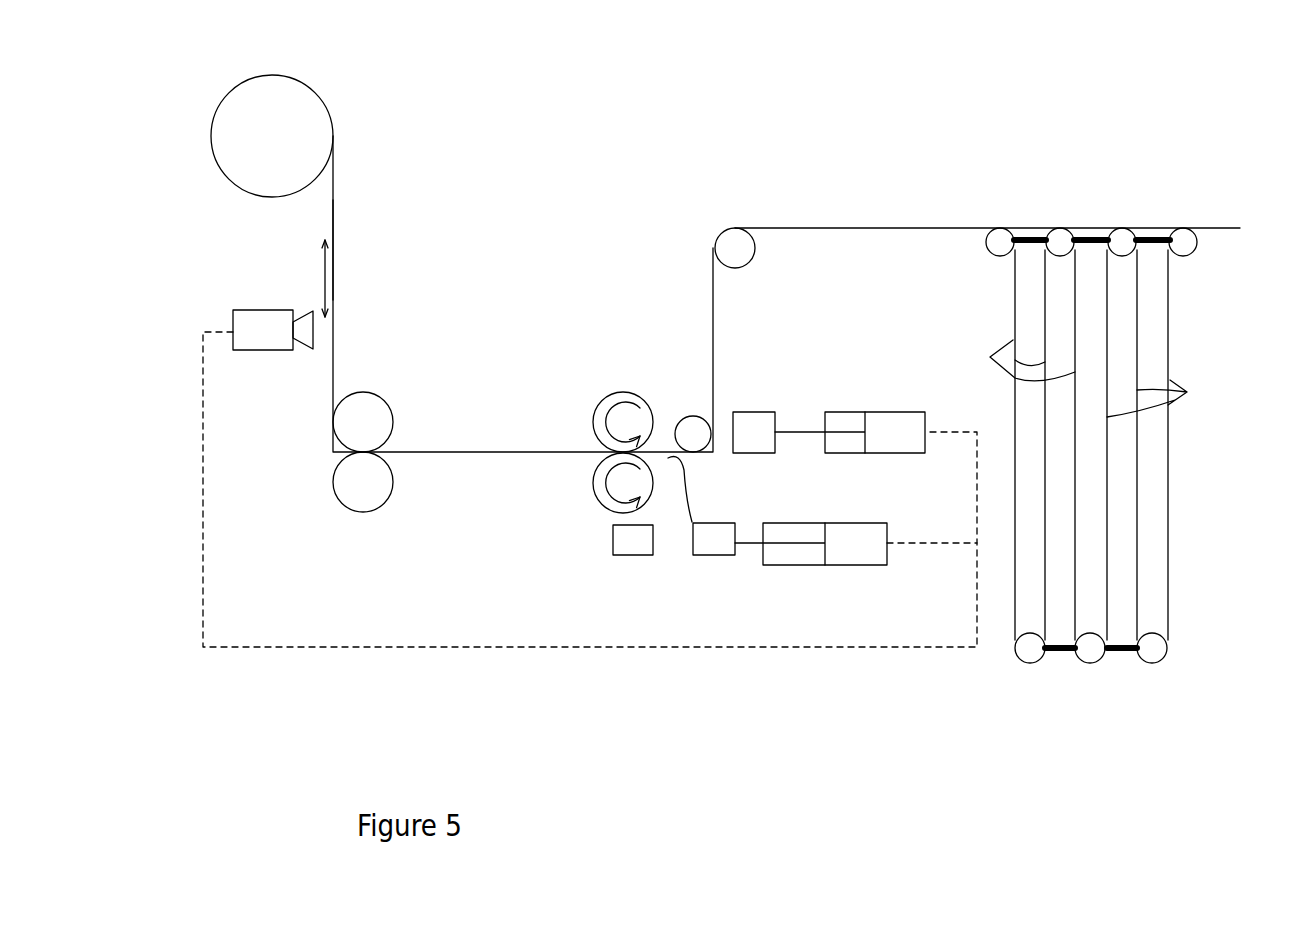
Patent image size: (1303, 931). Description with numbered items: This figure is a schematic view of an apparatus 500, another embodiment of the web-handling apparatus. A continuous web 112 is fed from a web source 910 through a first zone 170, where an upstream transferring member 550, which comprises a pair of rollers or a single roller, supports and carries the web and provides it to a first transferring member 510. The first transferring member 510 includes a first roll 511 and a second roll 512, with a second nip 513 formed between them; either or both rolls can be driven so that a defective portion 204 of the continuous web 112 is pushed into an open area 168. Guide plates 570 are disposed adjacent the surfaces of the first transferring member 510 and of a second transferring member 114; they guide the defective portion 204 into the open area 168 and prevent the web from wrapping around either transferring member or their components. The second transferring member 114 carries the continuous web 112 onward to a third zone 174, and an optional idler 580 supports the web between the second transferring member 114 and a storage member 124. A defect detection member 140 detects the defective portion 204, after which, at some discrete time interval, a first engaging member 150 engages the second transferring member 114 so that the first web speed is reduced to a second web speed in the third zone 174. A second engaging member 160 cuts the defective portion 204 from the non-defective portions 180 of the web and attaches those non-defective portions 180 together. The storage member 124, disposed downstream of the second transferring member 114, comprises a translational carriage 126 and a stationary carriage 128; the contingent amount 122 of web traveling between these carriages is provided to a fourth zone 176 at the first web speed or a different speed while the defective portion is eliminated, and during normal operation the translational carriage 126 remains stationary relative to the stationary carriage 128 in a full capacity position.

The apparatus 500 is at (1120, 153).
The web source 910 is at (232, 137).
The non-defective portions 180 is at (342, 179).
The continuous web 112 is at (335, 258).
The defective portion 204 is at (320, 278).
The defect detection member 140 is at (247, 322).
The upstream transferring member 550 is at (383, 390).
The first zone 170 is at (417, 470).
The first transferring member 510 is at (576, 469).
The first roll 511 is at (618, 392).
The second roll 512 is at (608, 490).
The second nip 513 is at (588, 446).
The second transferring member 114 is at (690, 428).
The guide plates 570 is at (684, 470).
The open area 168 is at (676, 558).
The first engaging member 150 is at (827, 380).
The second engaging member 160 is at (805, 574).
The idler 580 is at (730, 240).
The third zone 174 is at (798, 235).
The stationary carriage 128 is at (1028, 232).
The contingent amount 122 is at (1098, 445).
The translational carriage 126 is at (1060, 655).
The fourth zone 176 is at (1240, 238).
The storage member 124 is at (1198, 574).